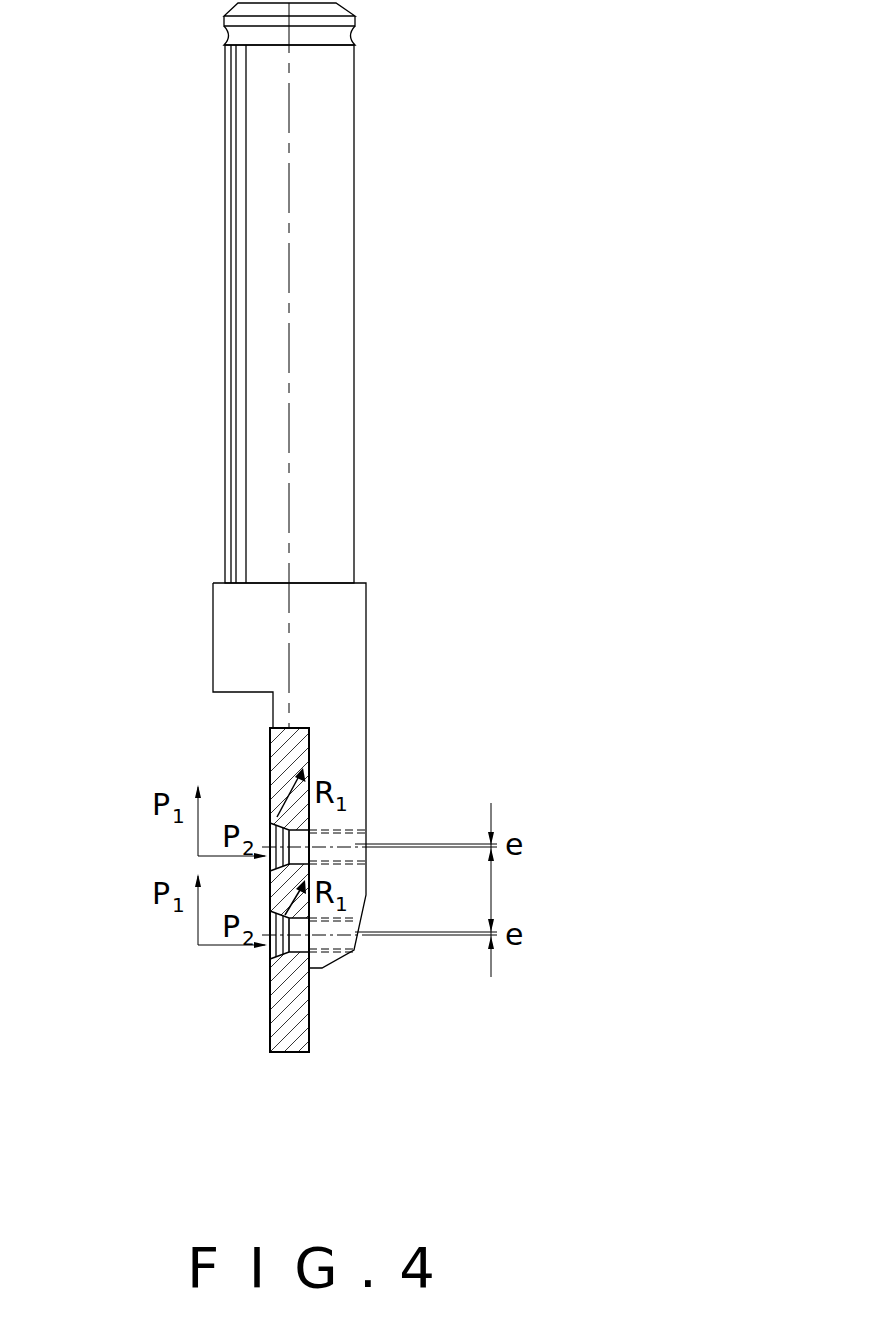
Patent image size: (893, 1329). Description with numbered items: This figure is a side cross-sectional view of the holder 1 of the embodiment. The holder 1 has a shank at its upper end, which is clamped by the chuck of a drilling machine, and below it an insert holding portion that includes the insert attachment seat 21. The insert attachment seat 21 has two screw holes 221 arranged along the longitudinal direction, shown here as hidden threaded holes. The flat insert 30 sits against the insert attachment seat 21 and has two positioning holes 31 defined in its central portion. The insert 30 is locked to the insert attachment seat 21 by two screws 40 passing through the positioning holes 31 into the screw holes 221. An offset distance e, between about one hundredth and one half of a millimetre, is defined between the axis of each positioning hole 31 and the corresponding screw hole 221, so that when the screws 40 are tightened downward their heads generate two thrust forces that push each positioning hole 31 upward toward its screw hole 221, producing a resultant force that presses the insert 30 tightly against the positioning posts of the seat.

The holder 1 is at (387, 247).
The insert attachment seat 21 is at (312, 751).
The insert 30 is at (295, 997).
The positioning holes 31 is at (270, 828).
The screws 40 is at (300, 848).
The screw holes 221 is at (335, 833).